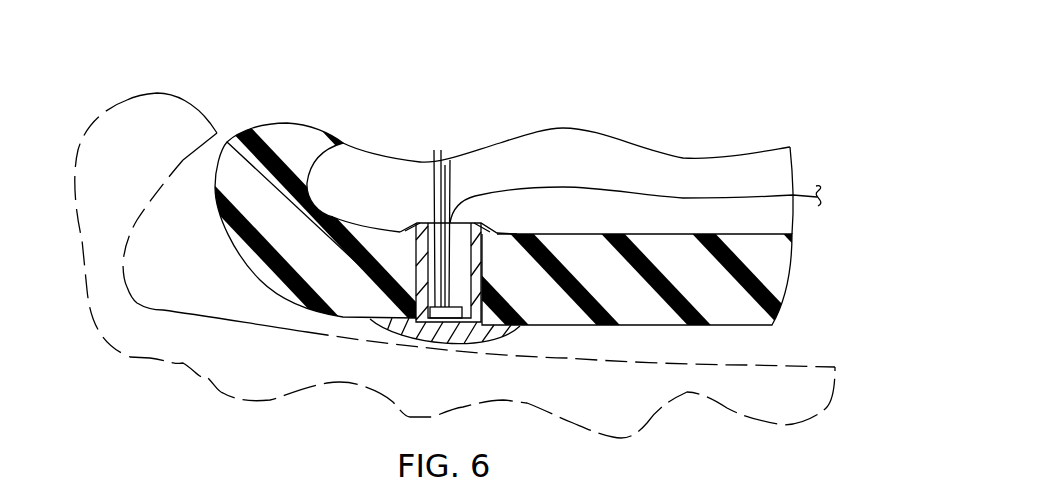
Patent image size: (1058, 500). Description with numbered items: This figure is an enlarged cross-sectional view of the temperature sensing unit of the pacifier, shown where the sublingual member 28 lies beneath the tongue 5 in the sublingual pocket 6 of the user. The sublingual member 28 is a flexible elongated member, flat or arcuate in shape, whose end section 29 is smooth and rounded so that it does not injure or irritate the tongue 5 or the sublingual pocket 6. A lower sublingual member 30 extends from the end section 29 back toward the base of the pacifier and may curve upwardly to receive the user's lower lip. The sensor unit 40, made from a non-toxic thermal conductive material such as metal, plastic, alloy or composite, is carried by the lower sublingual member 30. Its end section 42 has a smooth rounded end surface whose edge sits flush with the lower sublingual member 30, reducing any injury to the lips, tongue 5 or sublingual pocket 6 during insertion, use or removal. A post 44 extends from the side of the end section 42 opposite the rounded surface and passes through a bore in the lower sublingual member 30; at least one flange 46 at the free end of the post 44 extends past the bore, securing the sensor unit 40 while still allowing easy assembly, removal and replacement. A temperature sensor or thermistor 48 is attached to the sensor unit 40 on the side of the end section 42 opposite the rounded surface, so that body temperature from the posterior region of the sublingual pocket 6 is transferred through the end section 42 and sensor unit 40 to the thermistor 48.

The tongue 5 is at (147, 95).
The sublingual pocket 6 is at (402, 366).
The sublingual member 28 is at (280, 125).
The end section 29 is at (217, 168).
The lower sublingual member 30 is at (749, 326).
The sensor unit 40 is at (392, 333).
The end section 42 is at (458, 330).
The post 44 is at (434, 150).
The flange 46 is at (407, 228).
The temperature sensor 48 is at (450, 160).